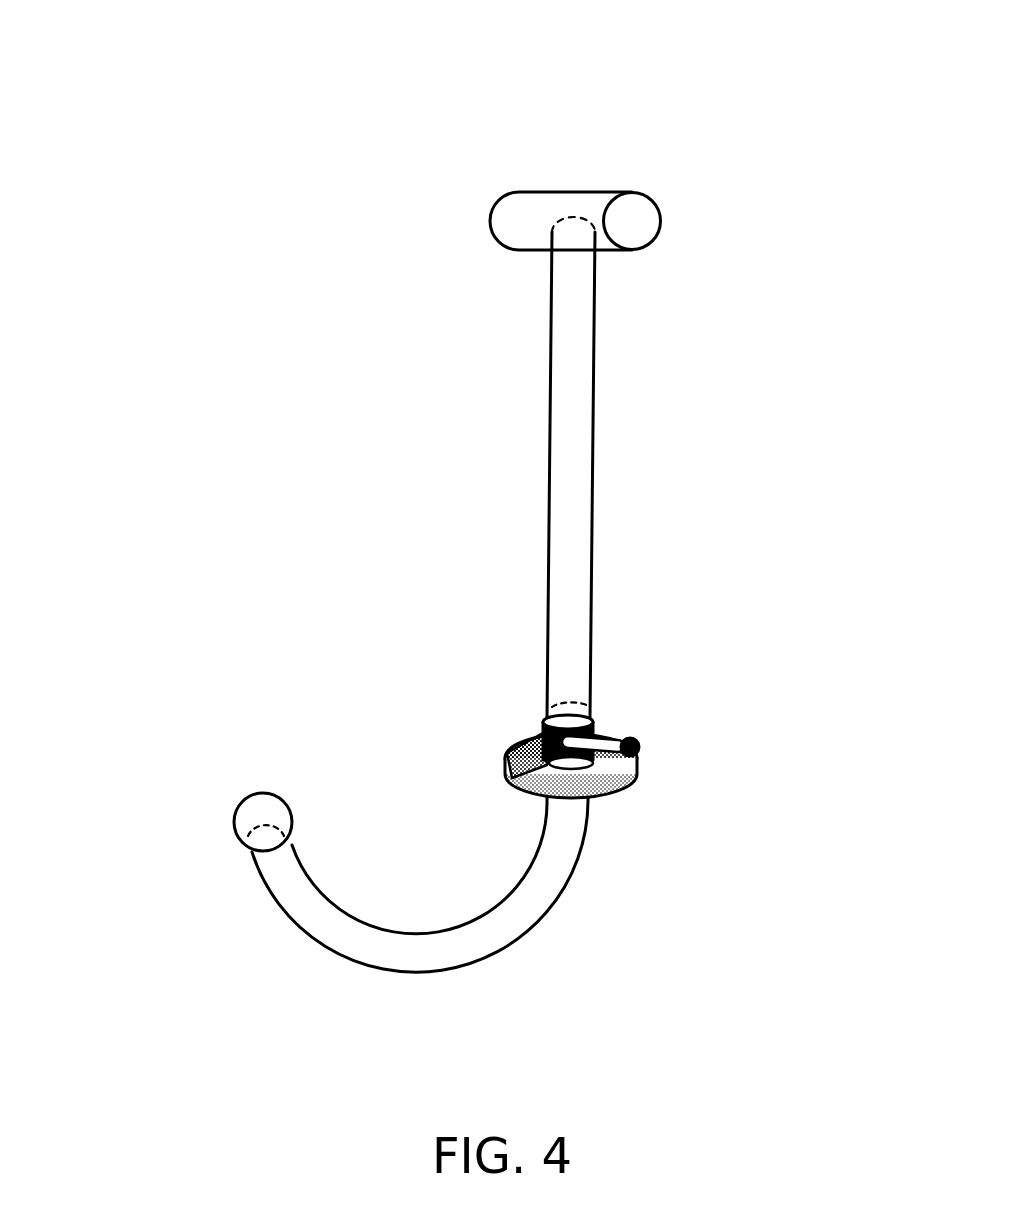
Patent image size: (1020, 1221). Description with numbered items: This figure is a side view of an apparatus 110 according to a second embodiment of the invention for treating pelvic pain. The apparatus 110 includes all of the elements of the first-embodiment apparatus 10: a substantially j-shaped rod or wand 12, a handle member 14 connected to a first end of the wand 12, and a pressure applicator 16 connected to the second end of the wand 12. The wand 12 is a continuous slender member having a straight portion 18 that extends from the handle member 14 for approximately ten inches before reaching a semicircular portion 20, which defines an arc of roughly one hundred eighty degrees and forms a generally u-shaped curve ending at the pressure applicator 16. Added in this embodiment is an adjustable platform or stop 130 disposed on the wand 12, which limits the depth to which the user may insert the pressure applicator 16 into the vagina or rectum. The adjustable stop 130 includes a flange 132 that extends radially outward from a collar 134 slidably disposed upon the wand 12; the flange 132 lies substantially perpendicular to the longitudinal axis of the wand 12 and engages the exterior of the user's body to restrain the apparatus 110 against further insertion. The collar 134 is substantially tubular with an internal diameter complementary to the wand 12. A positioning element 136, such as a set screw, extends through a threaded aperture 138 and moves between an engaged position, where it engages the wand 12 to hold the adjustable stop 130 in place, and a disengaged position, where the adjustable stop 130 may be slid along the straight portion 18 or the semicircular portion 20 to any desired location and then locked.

The apparatus 110 is at (430, 140).
The apparatus 10 is at (722, 388).
The wand 12 is at (550, 516).
The handle member 14 is at (660, 218).
The pressure applicator 16 is at (233, 820).
The straight portion 18 is at (590, 278).
The semicircular portion 20 is at (530, 920).
The adjustable stop 130 is at (700, 655).
The flange 132 is at (618, 793).
The collar 134 is at (540, 725).
The positioning element 136 is at (640, 747).
The threaded aperture 138 is at (507, 773).